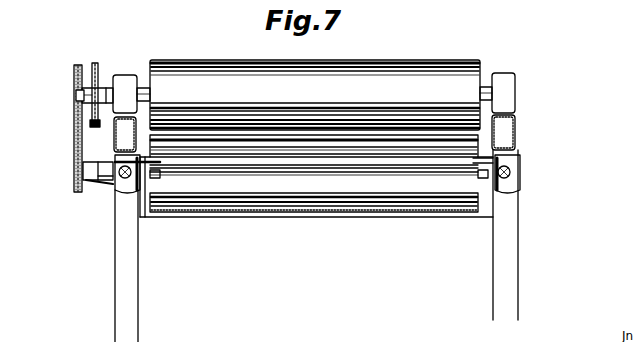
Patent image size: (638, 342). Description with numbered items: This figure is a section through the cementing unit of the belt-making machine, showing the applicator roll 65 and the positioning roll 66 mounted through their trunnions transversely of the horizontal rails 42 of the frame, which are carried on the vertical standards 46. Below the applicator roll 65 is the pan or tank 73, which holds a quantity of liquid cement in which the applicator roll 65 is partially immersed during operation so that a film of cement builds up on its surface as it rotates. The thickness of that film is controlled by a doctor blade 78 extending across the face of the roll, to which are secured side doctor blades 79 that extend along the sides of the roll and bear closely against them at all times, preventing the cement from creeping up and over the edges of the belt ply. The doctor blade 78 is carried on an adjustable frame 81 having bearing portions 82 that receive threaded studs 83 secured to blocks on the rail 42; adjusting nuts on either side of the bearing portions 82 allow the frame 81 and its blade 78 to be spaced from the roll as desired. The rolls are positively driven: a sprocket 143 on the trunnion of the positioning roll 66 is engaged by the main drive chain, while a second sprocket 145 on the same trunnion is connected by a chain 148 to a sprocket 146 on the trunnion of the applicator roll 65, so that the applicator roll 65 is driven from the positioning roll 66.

The horizontal rails 42 is at (516, 128).
The vertical standards 46 is at (508, 245).
The applicator roll 65 is at (258, 195).
The positioning roll 66 is at (315, 95).
The pan or tank 73 is at (303, 205).
The doctor blades 78 is at (373, 174).
The side doctor blades 79 is at (153, 175).
The adjustable frame 81 is at (213, 170).
The bearing portions 82 is at (128, 184).
The threaded studs 83 is at (123, 180).
The sprocket 143 is at (110, 50).
The sprocket 145 is at (84, 97).
The sprocket 146 is at (84, 170).
The chain 148 is at (76, 133).